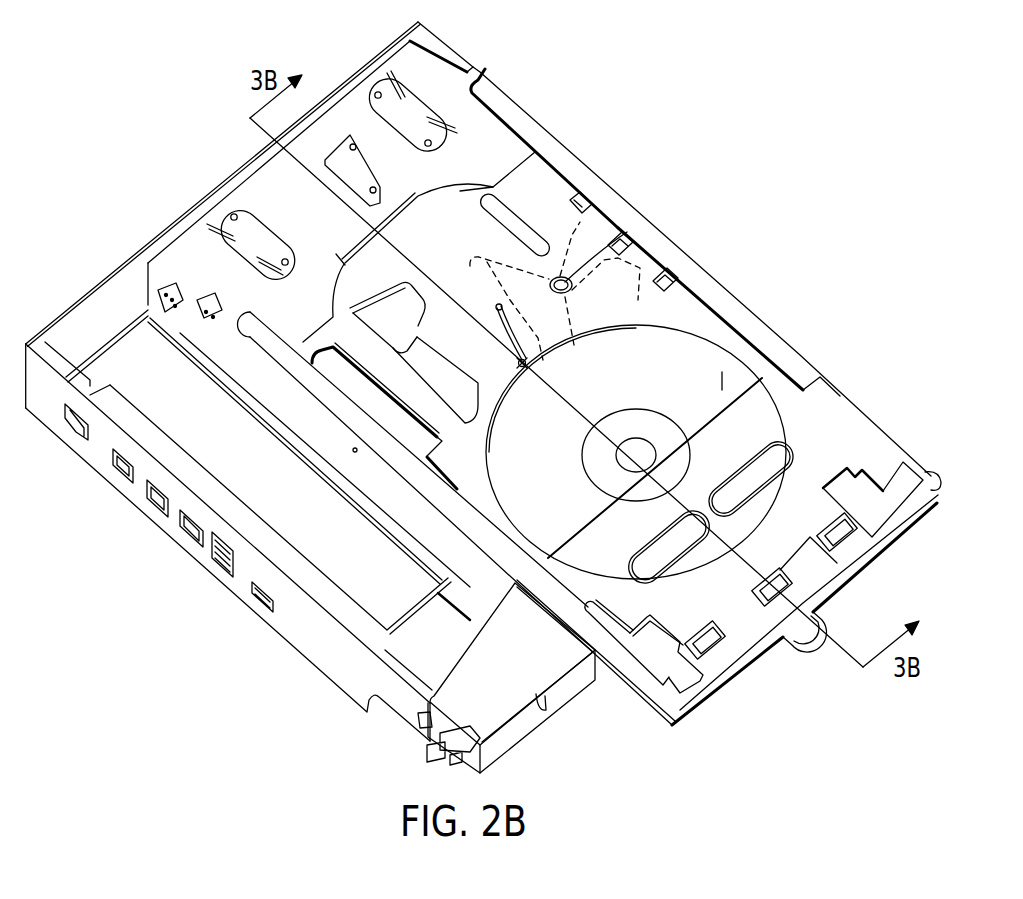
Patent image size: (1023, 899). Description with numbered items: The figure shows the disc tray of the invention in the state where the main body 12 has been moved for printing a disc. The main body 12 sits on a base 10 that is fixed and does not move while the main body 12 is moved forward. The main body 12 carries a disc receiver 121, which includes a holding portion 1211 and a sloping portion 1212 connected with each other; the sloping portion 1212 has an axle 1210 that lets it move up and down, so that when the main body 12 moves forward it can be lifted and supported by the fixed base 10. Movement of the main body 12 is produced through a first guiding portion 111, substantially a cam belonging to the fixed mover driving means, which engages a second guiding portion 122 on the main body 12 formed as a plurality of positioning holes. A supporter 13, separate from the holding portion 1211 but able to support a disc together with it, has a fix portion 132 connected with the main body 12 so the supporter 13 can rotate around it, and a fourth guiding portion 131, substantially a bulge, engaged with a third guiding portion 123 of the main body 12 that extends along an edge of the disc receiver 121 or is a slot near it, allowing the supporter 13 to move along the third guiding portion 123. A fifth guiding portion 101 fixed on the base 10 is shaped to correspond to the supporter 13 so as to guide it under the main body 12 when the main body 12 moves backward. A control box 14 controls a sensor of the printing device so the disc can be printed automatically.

The base 10 is at (253, 207).
The fifth guiding portion 101 is at (355, 168).
The first guiding portion 111 is at (587, 192).
The main body 12 is at (875, 430).
The disc receiver 121 is at (731, 407).
The axle 1210 is at (760, 372).
The holding portion 1211 is at (770, 430).
The sloping portion 1212 is at (722, 372).
The second guiding portion 122 is at (633, 238).
The third guiding portion 123 is at (497, 312).
The supporter 13 is at (553, 377).
The fourth guiding portion 131 is at (512, 352).
The fix portion 132 is at (590, 235).
The control box 14 is at (496, 757).